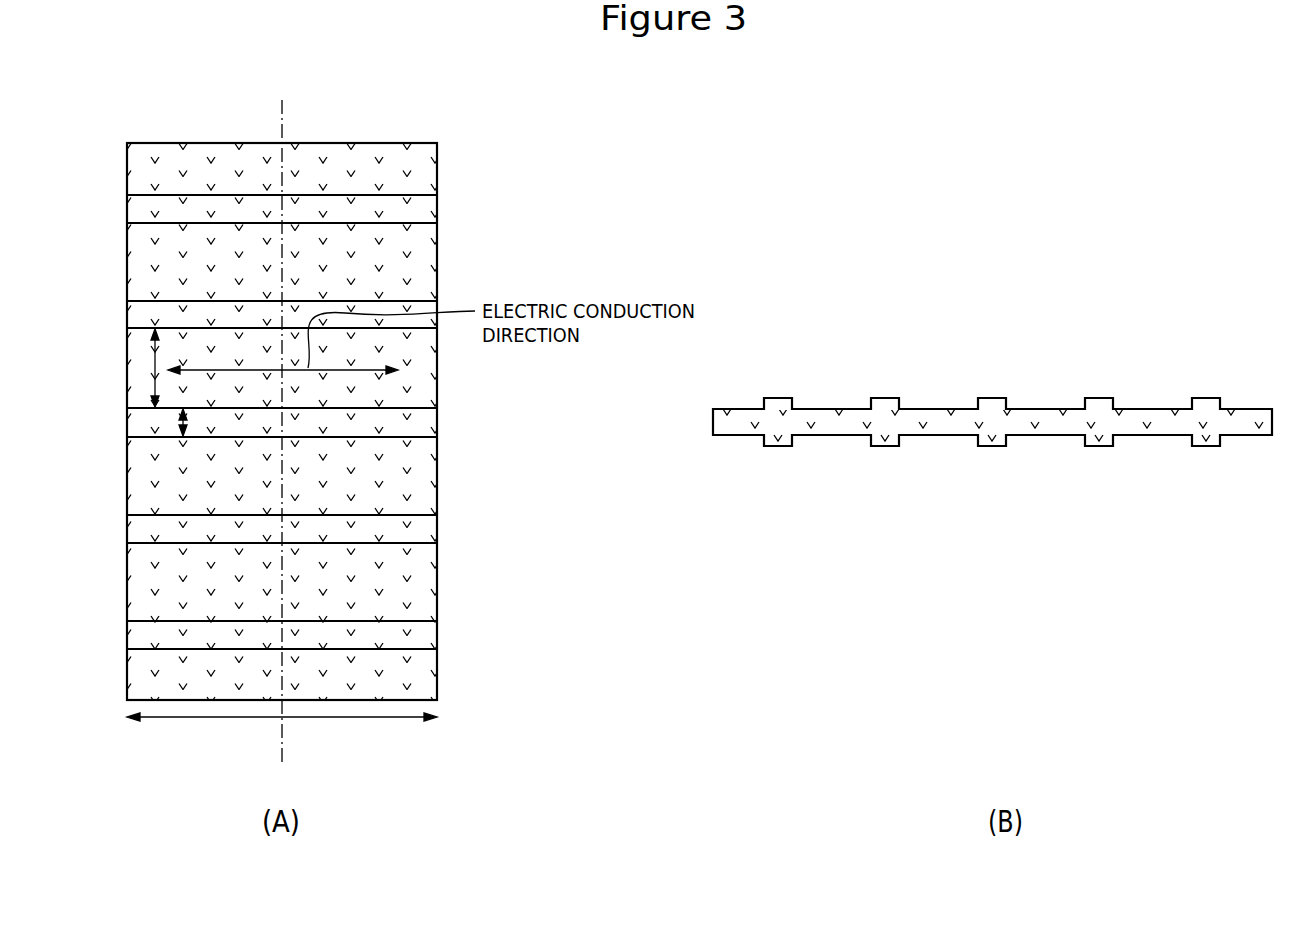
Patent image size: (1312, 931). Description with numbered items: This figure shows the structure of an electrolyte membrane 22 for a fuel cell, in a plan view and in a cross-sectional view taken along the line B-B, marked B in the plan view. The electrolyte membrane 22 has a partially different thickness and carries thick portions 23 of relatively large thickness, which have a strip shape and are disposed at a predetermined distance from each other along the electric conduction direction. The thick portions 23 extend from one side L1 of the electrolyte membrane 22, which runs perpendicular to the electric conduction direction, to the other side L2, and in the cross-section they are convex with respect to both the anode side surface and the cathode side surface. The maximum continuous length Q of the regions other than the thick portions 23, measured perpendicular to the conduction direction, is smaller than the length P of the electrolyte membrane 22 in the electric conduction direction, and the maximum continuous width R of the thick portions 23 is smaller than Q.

The electrolyte membrane 22 is at (437, 243).
The thick portions 23 is at (392, 205).
The one side of the electrolyte membrane L1 is at (126, 247).
The other side of the electrolyte membrane L2 is at (437, 475).
The maximum value of the continuous length of the regions other than the thick porti Q is at (155, 360).
The maximum value of the continuous width of the thick portions R is at (180, 413).
The length of the electrolyte membrane in the electric conduction direction P is at (282, 732).
The line B- B is at (294, 434).